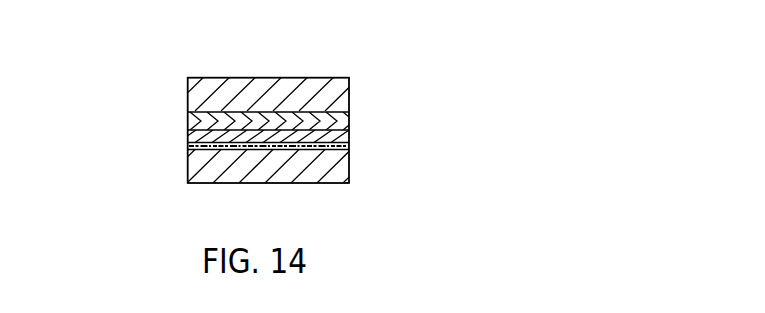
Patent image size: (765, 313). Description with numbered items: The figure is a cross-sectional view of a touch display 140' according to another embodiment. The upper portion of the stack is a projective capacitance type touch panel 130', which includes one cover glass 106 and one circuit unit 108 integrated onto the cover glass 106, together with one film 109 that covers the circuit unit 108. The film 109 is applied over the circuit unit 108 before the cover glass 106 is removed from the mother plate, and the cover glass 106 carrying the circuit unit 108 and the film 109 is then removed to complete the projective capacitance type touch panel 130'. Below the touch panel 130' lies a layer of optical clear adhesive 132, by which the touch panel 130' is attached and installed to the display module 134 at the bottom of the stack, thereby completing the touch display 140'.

The touch display 140' is at (241, 105).
The projective capacitance type touch panel 130' is at (219, 119).
The cover glass 106 is at (188, 93).
The circuit unit 108 is at (188, 118).
The film 109 is at (188, 133).
The optical clear adhesive 132 is at (349, 147).
The display module 134 is at (188, 170).